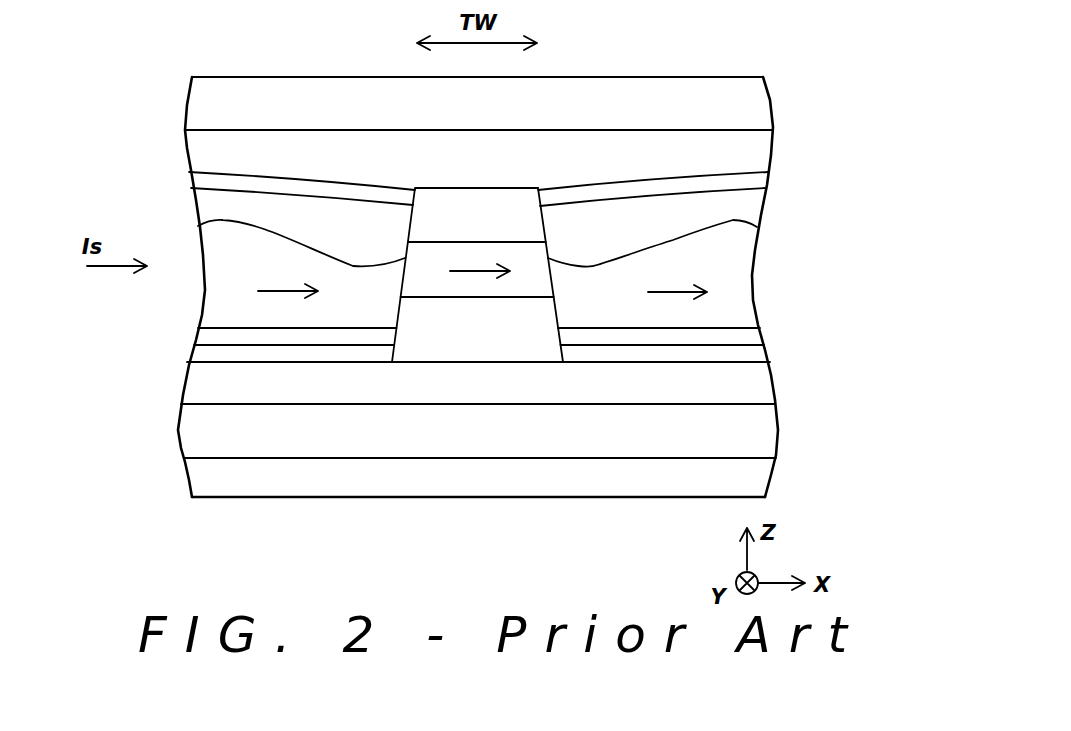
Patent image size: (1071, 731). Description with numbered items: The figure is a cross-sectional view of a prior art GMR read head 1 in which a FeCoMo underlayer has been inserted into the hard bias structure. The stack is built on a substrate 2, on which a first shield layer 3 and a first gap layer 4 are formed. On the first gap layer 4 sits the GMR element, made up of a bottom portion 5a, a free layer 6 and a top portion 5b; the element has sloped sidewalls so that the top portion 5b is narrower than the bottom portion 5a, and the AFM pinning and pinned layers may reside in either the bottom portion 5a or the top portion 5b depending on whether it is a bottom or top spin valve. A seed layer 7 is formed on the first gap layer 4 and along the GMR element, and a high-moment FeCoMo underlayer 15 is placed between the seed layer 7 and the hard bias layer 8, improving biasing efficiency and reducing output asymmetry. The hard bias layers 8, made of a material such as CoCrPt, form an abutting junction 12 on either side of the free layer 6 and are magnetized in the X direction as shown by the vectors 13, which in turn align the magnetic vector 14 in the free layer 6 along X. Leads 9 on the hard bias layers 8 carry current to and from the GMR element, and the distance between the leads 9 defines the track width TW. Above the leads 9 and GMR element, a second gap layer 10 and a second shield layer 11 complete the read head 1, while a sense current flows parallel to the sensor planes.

The read head 1 is at (174, 58).
The substrate 2 is at (753, 478).
The first shield layer 3 is at (753, 428).
The first gap layer 4 is at (755, 383).
The bottom portion 5a is at (425, 347).
The top portion 5b is at (500, 210).
The free layer 6 is at (537, 273).
The seed layer 7 is at (208, 352).
The hard bias layer 8 is at (220, 289).
The leads 9 is at (198, 183).
The second gap layer 10 is at (755, 150).
The second shield layer 11 is at (758, 101).
The abutting junction 12 is at (197, 225).
The vectors 13 is at (280, 291).
The magnetic vector 14 is at (482, 271).
The underlayer 15 is at (208, 340).